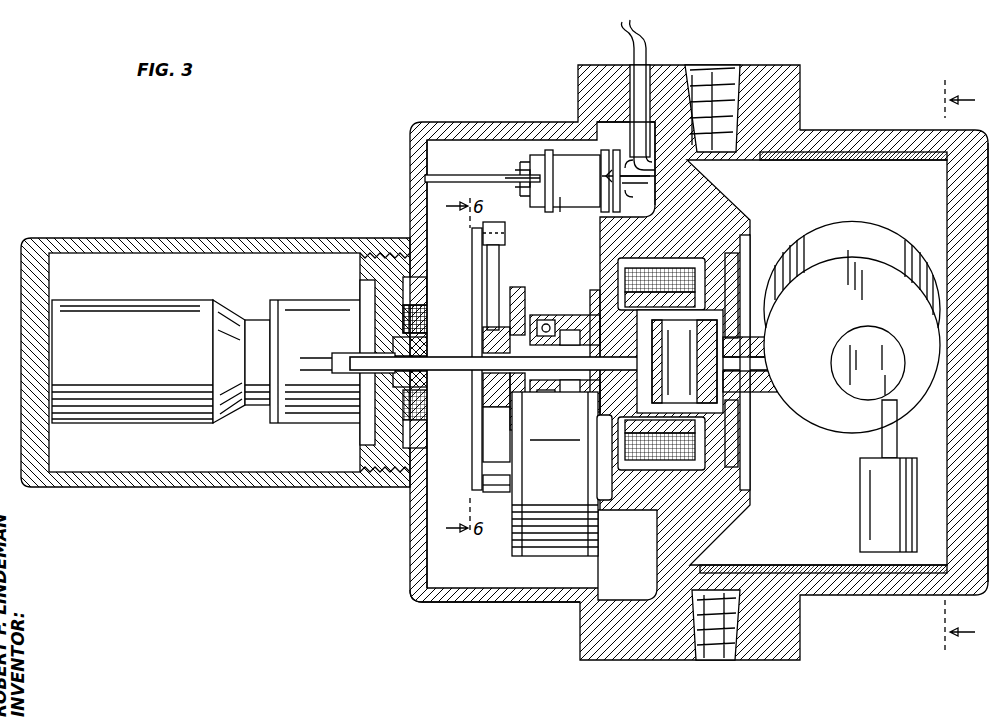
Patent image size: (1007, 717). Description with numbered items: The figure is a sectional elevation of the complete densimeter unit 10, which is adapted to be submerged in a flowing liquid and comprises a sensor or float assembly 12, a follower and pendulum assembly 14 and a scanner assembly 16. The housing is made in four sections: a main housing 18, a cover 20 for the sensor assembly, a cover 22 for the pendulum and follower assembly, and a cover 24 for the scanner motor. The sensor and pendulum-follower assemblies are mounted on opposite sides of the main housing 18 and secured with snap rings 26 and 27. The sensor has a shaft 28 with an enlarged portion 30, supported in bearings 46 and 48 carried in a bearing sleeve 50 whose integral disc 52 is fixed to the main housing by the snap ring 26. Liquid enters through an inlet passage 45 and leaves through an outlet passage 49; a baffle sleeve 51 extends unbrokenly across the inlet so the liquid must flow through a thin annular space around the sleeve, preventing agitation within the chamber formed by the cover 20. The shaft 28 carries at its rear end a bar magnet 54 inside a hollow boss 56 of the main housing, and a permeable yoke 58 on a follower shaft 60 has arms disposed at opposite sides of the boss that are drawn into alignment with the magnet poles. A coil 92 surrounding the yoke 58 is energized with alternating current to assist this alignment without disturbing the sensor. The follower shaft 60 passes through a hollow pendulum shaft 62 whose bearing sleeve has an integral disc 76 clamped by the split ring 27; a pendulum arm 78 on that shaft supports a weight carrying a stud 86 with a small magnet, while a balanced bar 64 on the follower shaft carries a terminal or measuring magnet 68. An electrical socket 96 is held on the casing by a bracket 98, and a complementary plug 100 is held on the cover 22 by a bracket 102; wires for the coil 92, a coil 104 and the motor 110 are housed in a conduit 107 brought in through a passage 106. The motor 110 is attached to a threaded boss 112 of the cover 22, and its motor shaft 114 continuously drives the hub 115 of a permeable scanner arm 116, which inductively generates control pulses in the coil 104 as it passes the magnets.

The unit 10 is at (471, 118).
The sensor or float assembly 12 is at (885, 177).
The follower and pendulum assembly 14 is at (520, 197).
The scanner assembly 16 is at (432, 261).
The main housing 18 is at (636, 660).
The cover 20 is at (858, 595).
The cover 22 is at (473, 611).
The cover 24 is at (280, 478).
The snap ring 26 is at (760, 278).
The snap ring 27 is at (582, 478).
The shaft 28 is at (790, 393).
The enlarged portion 30 is at (820, 388).
The inlet passage 45 is at (728, 660).
The bearing 46 is at (718, 340).
The bearing 48 is at (823, 345).
The outlet passage 49 is at (738, 70).
The bearing sleeve 50 is at (768, 392).
The baffle sleeve 51 is at (750, 565).
The disc 52 is at (745, 262).
The bar magnet 54 is at (728, 316).
The hollow boss 56 is at (598, 420).
The yoke 58 is at (598, 298).
The shaft 60 is at (524, 330).
The pendulum shaft 62 is at (505, 398).
The balanced bar 64 is at (488, 263).
The terminal or measuring magnet 68 is at (505, 230).
The disc 76 is at (612, 278).
The pendulum arm 78 is at (516, 525).
The stud 86 is at (483, 492).
The coil 92 is at (690, 270).
The electrical socket 96 is at (628, 162).
The bracket 98 is at (629, 187).
The plug member 100 is at (578, 200).
The bracket 102 is at (448, 178).
The coil 104 is at (470, 308).
The passage 106 is at (660, 68).
The conduit 107 is at (634, 42).
The motor 110 is at (166, 418).
The threaded boss 112 is at (372, 478).
The motor shaft 114 is at (398, 360).
The hub 115 is at (445, 410).
The scanner arm 116 is at (472, 285).